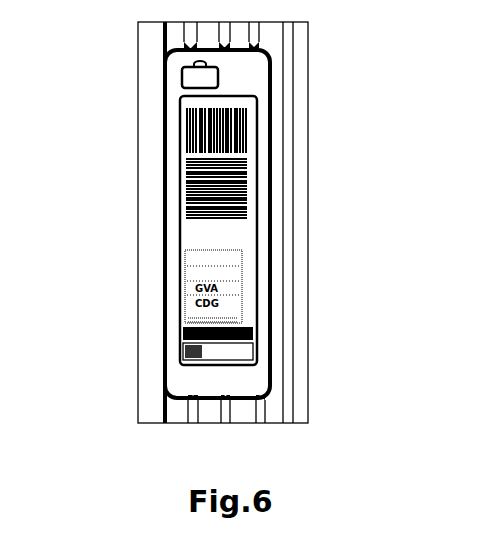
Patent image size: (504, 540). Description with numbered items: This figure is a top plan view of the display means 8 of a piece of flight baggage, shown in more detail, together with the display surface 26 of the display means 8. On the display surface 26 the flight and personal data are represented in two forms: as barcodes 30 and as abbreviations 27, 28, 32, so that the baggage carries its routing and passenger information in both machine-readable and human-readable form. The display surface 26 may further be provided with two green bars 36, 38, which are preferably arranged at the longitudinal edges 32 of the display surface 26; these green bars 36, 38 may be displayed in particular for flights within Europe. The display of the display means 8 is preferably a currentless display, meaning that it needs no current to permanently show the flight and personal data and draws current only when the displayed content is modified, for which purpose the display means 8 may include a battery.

The display means 8 is at (280, 205).
The display surface 26 is at (263, 157).
The abbreviation 27 is at (190, 256).
The abbreviation 28 is at (192, 274).
The barcode 30 is at (192, 190).
The longitudinal edge 32 is at (165, 234).
The green bar 36 is at (181, 311).
The green bar 38 is at (259, 307).